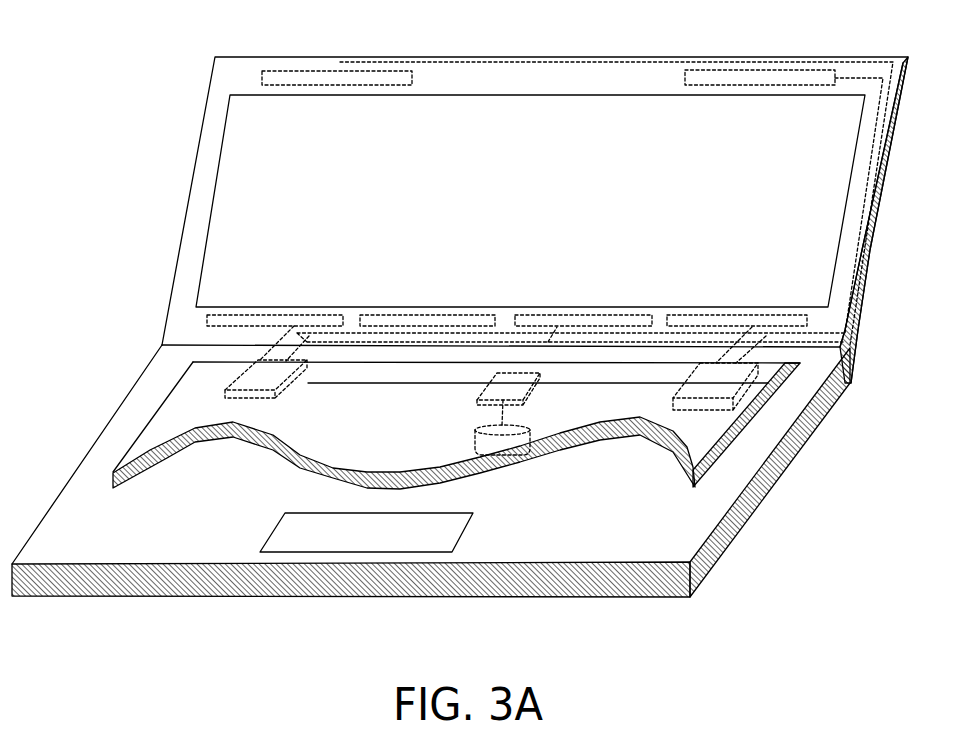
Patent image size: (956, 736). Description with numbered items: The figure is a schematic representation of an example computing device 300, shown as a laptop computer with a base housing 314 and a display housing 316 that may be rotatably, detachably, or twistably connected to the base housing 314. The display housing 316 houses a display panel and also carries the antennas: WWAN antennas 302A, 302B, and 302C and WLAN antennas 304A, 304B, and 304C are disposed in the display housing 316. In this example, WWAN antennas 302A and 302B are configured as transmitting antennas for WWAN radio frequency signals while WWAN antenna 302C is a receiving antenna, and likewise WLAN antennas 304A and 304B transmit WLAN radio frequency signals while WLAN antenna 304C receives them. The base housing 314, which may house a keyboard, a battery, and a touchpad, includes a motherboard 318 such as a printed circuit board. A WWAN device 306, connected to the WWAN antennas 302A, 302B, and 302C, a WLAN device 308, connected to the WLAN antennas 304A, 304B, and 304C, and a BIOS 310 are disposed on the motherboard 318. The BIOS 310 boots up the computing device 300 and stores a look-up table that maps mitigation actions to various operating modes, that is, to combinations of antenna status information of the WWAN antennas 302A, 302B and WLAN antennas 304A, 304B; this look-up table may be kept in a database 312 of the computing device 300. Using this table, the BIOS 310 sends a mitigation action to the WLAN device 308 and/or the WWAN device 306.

The computing device 300 is at (624, 636).
The WWAN antenna 302A is at (748, 72).
The WWAN antenna 302B is at (806, 325).
The WWAN antenna 302C is at (288, 72).
The WLAN antenna 304A is at (656, 322).
The WLAN antenna 304B is at (288, 322).
The WLAN antenna 304C is at (362, 322).
The WWAN device 306 is at (812, 430).
The WLAN device 308 is at (226, 392).
The BIOS 310 is at (533, 388).
The database 312 is at (530, 452).
The base housing 314 is at (788, 467).
The display housing 316 is at (650, 57).
The motherboard 318 is at (836, 398).